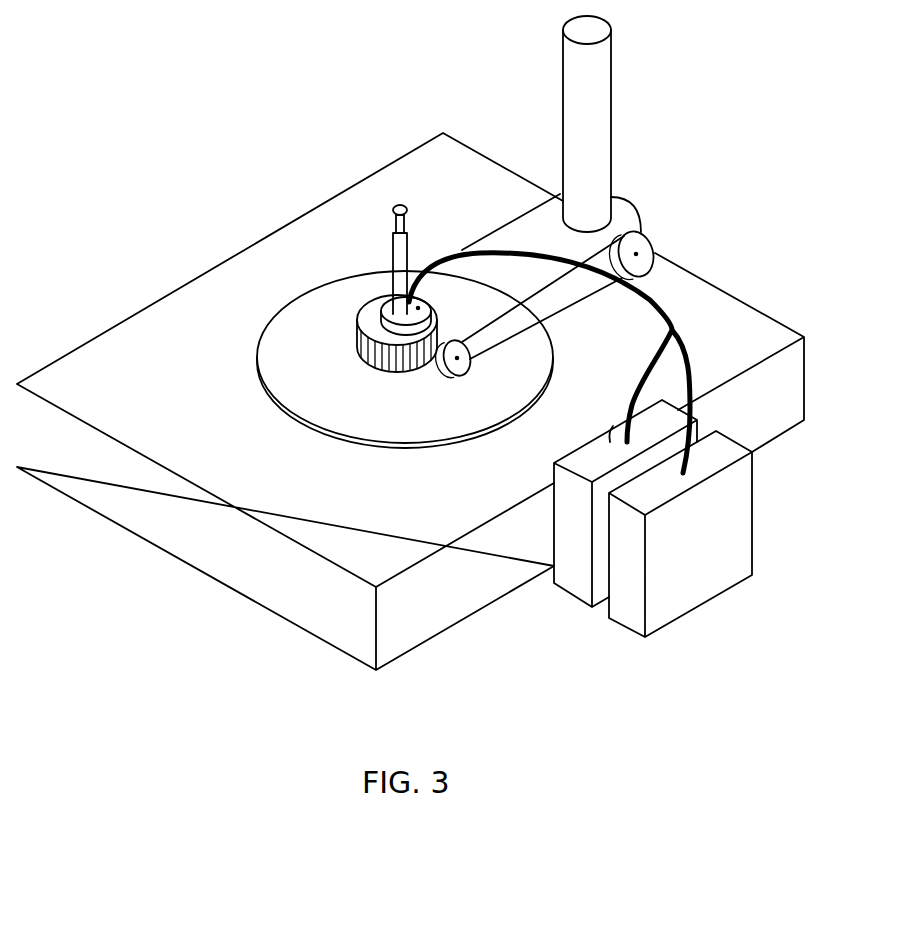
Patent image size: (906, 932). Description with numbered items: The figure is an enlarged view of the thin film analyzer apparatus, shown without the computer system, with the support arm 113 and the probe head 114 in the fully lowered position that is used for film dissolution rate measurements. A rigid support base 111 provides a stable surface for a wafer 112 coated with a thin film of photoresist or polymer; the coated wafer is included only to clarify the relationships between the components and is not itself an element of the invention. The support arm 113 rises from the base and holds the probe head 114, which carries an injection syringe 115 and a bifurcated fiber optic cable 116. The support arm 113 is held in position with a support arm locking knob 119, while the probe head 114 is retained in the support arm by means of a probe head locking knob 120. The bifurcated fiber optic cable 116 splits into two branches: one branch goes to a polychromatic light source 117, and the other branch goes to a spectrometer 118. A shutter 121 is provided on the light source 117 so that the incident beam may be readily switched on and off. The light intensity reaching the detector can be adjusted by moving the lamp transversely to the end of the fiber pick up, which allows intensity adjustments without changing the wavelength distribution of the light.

The rigid support base 111 is at (178, 563).
The wafer 112 is at (282, 403).
The support arm 113 is at (505, 222).
The probe head 114 is at (416, 303).
The injection syringe 115 is at (393, 258).
The bifurcated fiber optic cable 116 is at (654, 296).
The polychromatic light source 117 is at (565, 592).
The spectrometer 118 is at (687, 615).
The support arm locking knob 119 is at (650, 234).
The probe head locking knob 120 is at (472, 360).
The shutter 121 is at (612, 430).